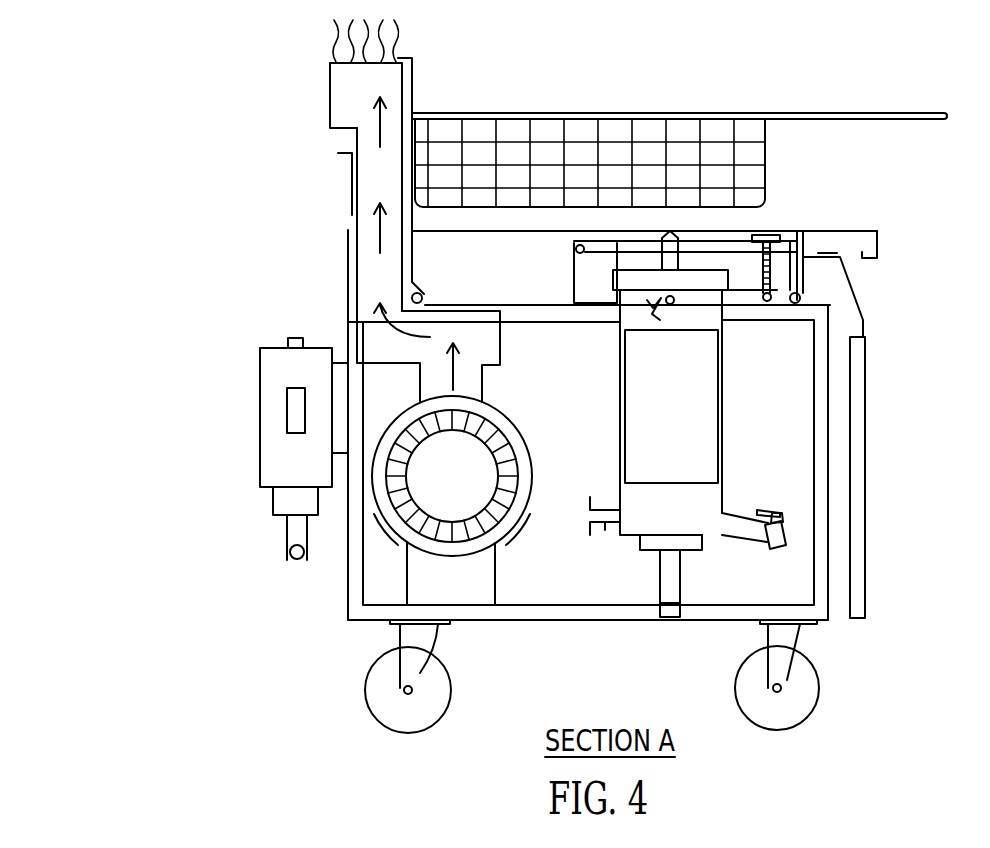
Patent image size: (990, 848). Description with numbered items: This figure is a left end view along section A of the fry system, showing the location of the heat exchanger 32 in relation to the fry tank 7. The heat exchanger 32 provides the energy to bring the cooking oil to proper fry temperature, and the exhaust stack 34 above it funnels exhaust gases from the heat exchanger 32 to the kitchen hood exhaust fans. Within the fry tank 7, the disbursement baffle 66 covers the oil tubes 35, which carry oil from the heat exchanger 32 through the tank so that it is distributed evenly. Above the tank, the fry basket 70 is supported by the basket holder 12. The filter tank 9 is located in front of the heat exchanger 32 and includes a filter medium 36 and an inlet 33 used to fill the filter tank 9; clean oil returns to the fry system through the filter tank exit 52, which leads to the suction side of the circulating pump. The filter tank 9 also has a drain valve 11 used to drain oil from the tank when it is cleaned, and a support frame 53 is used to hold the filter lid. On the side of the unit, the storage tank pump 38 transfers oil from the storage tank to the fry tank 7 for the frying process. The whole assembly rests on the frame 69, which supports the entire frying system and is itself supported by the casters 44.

The fry tank 7 is at (805, 273).
The filter tank 9 is at (722, 443).
The drain valve 11 is at (770, 548).
The basket holder 12 is at (430, 123).
The heat exchanger 32 is at (533, 500).
The inlet 33 is at (665, 305).
The exhaust stack 34 is at (330, 95).
The disbursement tubes 35 is at (803, 298).
The filter medium 36 is at (677, 383).
The storage tank pump 38 is at (260, 412).
The casters 44 is at (380, 705).
The filter tank exit 52 is at (603, 523).
The support frame 53 is at (617, 240).
The disbursement baffle 66 is at (357, 293).
The frame 69 is at (828, 508).
The fry basket 70 is at (800, 113).